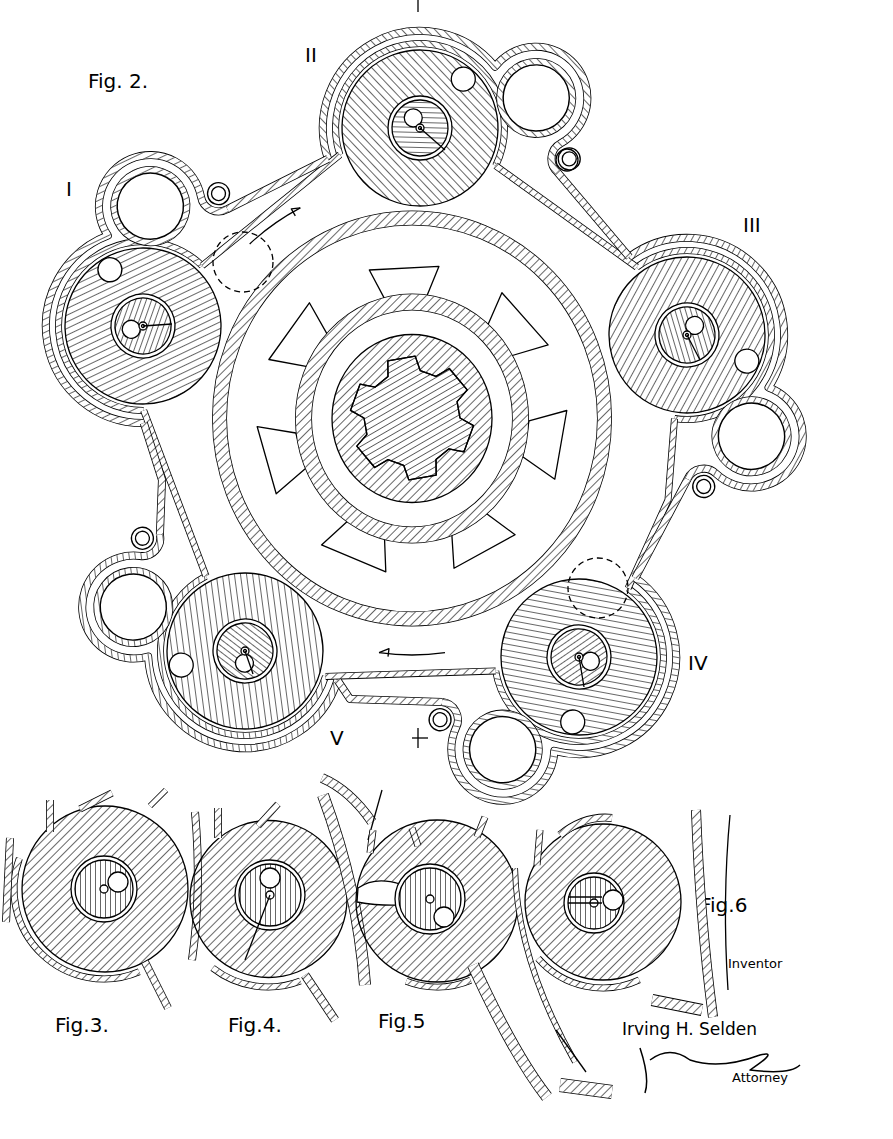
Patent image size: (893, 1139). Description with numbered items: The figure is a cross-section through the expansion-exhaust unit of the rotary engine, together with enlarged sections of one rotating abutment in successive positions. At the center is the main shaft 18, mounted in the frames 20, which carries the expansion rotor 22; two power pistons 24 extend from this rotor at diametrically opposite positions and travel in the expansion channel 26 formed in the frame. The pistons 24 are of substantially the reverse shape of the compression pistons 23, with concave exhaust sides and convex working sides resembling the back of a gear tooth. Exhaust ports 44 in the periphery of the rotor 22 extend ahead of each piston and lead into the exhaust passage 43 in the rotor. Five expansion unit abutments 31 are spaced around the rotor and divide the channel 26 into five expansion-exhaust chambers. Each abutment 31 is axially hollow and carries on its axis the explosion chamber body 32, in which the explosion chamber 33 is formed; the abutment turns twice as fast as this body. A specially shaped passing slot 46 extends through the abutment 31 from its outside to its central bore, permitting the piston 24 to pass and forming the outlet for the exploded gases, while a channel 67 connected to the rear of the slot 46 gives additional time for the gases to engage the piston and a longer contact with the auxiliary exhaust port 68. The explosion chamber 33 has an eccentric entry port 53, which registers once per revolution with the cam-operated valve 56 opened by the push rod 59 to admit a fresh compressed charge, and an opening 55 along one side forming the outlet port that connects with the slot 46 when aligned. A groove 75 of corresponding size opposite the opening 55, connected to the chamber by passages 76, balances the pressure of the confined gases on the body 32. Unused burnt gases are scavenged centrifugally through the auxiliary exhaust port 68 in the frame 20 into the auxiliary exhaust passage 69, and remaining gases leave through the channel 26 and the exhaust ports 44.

In FIG. 2, the main shaft 18 is at (452, 398).
In FIG. 2, the frame 20 is at (612, 232).
In FIG. 3, the frame 20 is at (152, 988).
In FIG. 4, the frame 20 is at (330, 1018).
In FIG. 5, the frame 20 is at (506, 1040).
In FIG. 6, the frame 20 is at (650, 1005).
In FIG. 2, the expansion rotor 22 is at (215, 468).
In FIG. 3, the expansion rotor 22 is at (192, 958).
In FIG. 4, the expansion rotor 22 is at (385, 795).
In FIG. 5, the expansion rotor 22 is at (560, 1040).
In FIG. 6, the expansion rotor 22 is at (694, 958).
In FIG. 2, the piston 23 is at (248, 248).
In FIG. 2, the piston 24 is at (262, 355).
In FIG. 3, the piston 24 is at (175, 912).
In FIG. 4, the piston 24 is at (330, 785).
In FIG. 5, the piston 24 is at (575, 1085).
In FIG. 6, the piston 24 is at (700, 990).
In FIG. 2, the expansion channel 26 is at (210, 486).
In FIG. 3, the expansion channel 26 is at (190, 972).
In FIG. 4, the expansion channel 26 is at (360, 812).
In FIG. 5, the expansion channel 26 is at (505, 1015).
In FIG. 6, the expansion channel 26 is at (690, 808).
In FIG. 2, the expansion unit abutment 31 is at (425, 95).
In FIG. 3, the expansion unit abutment 31 is at (75, 950).
In FIG. 4, the expansion unit abutment 31 is at (320, 940).
In FIG. 5, the expansion unit abutment 31 is at (436, 980).
In FIG. 6, the expansion unit abutment 31 is at (640, 868).
In FIG. 2, the explosion chamber body 32 is at (432, 120).
In FIG. 3, the explosion chamber body 32 is at (70, 930).
In FIG. 4, the explosion chamber body 32 is at (288, 912).
In FIG. 5, the explosion chamber body 32 is at (420, 930).
In FIG. 6, the explosion chamber body 32 is at (560, 968).
In FIG. 2, the explosion chamber 33 is at (710, 340).
In FIG. 4, the explosion chamber 33 is at (245, 956).
In FIG. 2, the exhaust passage 43 is at (375, 286).
In FIG. 2, the exhaust port 44 is at (432, 228).
In FIG. 3, the exhaust port 44 is at (185, 848).
In FIG. 4, the exhaust port 44 is at (380, 790).
In FIG. 5, the exhaust port 44 is at (530, 990).
In FIG. 6, the exhaust port 44 is at (716, 814).
In FIG. 2, the passing slot 46 is at (468, 170).
In FIG. 4, the passing slot 46 is at (270, 862).
In FIG. 5, the passing slot 46 is at (405, 880).
In FIG. 6, the passing slot 46 is at (607, 938).
In FIG. 2, the entry port 53 is at (160, 312).
In FIG. 3, the entry port 53 is at (128, 870).
In FIG. 4, the entry port 53 is at (275, 866).
In FIG. 5, the entry port 53 is at (455, 925).
In FIG. 6, the entry port 53 is at (625, 900).
In FIG. 2, the opening (outlet port) 55 is at (415, 128).
In FIG. 3, the opening (outlet port) 55 is at (150, 840).
In FIG. 4, the opening (outlet port) 55 is at (262, 810).
In FIG. 5, the opening (outlet port) 55 is at (440, 910).
In FIG. 6, the opening (outlet port) 55 is at (585, 902).
In FIG. 3, the cam-operated valve 56 is at (45, 850).
In FIG. 5, the cam-operated valve 56 is at (480, 940).
In FIG. 6, the cam-operated valve 56 is at (586, 826).
In FIG. 2, the push rod 59 is at (95, 385).
In FIG. 2, the channel 67 is at (455, 192).
In FIG. 3, the channel 67 is at (76, 918).
In FIG. 4, the channel 67 is at (298, 830).
In FIG. 5, the channel 67 is at (392, 838).
In FIG. 6, the channel 67 is at (588, 973).
In FIG. 2, the auxiliary exhaust port 68 is at (492, 100).
In FIG. 3, the auxiliary exhaust port 68 is at (50, 820).
In FIG. 4, the auxiliary exhaust port 68 is at (220, 822).
In FIG. 5, the auxiliary exhaust port 68 is at (481, 827).
In FIG. 6, the auxiliary exhaust port 68 is at (560, 828).
In FIG. 2, the auxiliary exhaust passage 69 is at (535, 112).
In FIG. 2, the groove 75 is at (578, 156).
In FIG. 2, the passage 76 is at (572, 168).